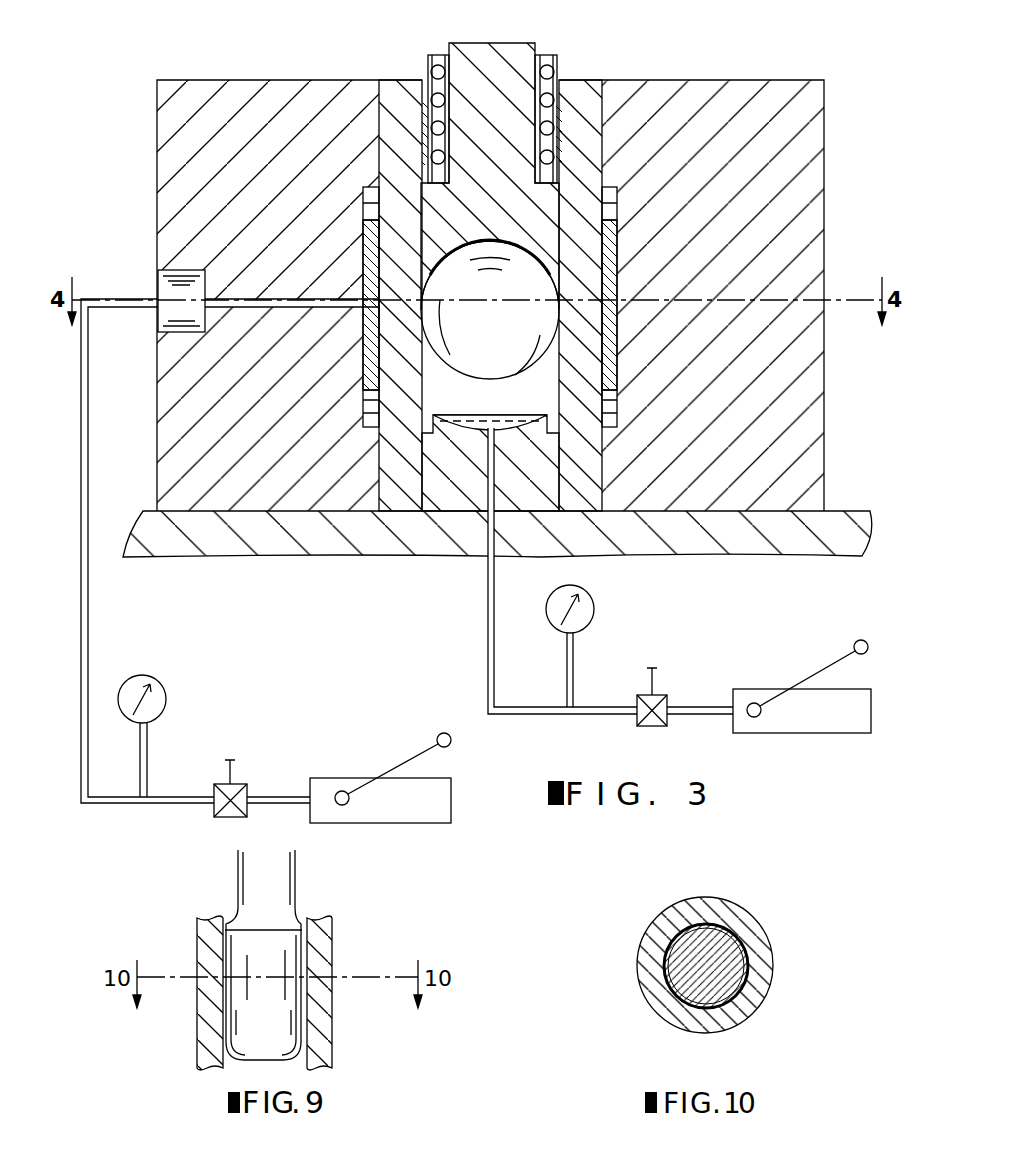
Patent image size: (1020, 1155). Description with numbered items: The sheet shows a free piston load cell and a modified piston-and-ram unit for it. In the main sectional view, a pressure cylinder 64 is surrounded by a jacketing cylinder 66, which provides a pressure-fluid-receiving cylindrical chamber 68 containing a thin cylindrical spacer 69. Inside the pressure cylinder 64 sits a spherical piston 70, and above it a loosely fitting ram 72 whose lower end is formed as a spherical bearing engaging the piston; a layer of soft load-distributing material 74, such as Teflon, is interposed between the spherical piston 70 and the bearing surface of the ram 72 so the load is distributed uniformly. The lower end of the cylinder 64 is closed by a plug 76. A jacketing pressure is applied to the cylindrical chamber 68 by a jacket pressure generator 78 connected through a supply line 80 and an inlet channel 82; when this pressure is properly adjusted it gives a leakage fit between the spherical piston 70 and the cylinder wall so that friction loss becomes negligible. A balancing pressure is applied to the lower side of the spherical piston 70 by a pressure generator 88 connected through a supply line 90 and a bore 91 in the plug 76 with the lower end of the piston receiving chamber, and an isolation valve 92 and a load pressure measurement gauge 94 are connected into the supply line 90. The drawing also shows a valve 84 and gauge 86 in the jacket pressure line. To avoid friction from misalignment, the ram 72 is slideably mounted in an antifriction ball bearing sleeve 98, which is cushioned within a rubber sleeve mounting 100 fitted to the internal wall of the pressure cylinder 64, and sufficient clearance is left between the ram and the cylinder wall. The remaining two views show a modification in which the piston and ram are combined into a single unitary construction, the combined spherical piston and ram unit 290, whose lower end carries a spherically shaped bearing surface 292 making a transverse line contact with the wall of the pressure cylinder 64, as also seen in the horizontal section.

In FIG. 3, the pressure cylinder 64 is at (602, 470).
In FIG. 9, the pressure cylinder 64 is at (326, 1038).
In FIG. 10, the pressure cylinder 64 is at (760, 992).
In FIG. 3, the jacketing cylinder 66 is at (710, 85).
In FIG. 3, the cylindrical chamber 68 is at (617, 287).
In FIG. 3, the thin cylindrical spacer 69 is at (610, 355).
In FIG. 3, the spherical piston 70 is at (500, 325).
In FIG. 3, the ram 72 is at (500, 173).
In FIG. 3, the soft load-distributing material 74 is at (516, 250).
In FIG. 3, the plug 76 is at (462, 468).
In FIG. 3, the jacket pressure generator 78 is at (340, 778).
In FIG. 3, the supply line 80 is at (88, 454).
In FIG. 3, the inlet channel 82 is at (283, 309).
In FIG. 3, the valve 84 is at (225, 786).
In FIG. 3, the pressure gauge 86 is at (165, 699).
In FIG. 3, the pressure generator 88 is at (758, 694).
In FIG. 3, the supply line 90 is at (488, 650).
In FIG. 3, the bore 91 is at (497, 522).
In FIG. 3, the isolation valve 92 is at (655, 695).
In FIG. 3, the load pressure measurement gauge 94 is at (589, 612).
In FIG. 3, the antifriction ball bearing sleeve 98 is at (445, 100).
In FIG. 3, the rubber sleeve mounting 100 is at (557, 130).
In FIG. 9, the combined spherical piston and ram unit 290 is at (293, 962).
In FIG. 10, the combined spherical piston and ram unit 290 is at (730, 947).
In FIG. 9, the spherically shaped bearing surface 292 is at (300, 1025).
In FIG. 10, the spherically shaped bearing surface 292 is at (753, 968).